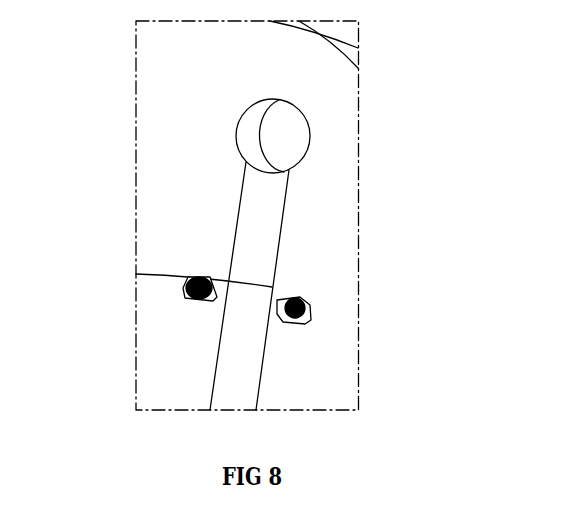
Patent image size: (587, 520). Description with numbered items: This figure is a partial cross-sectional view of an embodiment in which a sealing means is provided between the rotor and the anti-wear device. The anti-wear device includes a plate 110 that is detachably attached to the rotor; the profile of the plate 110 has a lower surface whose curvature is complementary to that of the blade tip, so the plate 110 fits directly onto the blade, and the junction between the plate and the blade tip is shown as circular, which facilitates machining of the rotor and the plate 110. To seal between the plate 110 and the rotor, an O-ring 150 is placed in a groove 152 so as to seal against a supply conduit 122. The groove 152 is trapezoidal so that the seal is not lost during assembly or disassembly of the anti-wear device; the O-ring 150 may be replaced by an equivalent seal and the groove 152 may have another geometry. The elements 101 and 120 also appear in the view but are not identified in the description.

The body 101 is at (188, 360).
The plate 110 is at (190, 83).
The ball head 120 is at (308, 140).
The supply conduit 122 is at (283, 228).
The O-ring 150 is at (185, 297).
The groove 152 is at (272, 295).